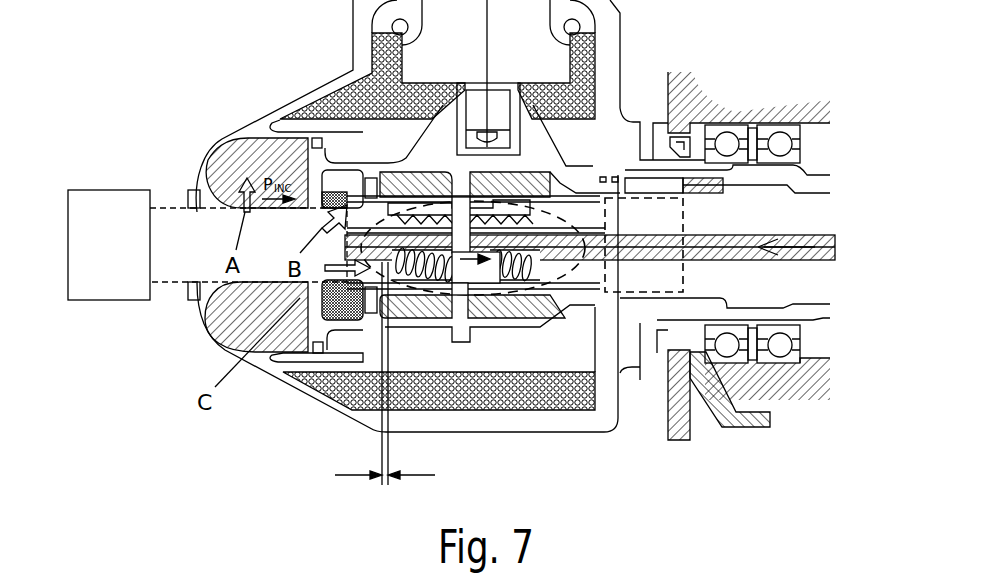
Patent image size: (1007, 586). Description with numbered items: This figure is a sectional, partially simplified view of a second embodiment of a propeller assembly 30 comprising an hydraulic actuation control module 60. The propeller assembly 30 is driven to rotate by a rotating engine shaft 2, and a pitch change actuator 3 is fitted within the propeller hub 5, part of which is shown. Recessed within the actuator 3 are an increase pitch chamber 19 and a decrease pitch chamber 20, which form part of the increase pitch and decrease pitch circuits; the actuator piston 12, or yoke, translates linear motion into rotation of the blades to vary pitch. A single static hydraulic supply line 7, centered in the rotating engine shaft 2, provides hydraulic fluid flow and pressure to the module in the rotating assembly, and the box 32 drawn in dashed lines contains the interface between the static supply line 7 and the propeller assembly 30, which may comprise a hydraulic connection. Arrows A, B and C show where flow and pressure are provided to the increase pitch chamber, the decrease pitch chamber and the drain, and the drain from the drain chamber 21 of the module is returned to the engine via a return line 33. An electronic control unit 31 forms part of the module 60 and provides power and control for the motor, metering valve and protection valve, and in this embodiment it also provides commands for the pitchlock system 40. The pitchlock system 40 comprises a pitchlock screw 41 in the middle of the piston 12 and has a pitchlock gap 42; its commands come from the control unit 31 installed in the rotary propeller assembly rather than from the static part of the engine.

The rotating engine shaft 2 is at (647, 355).
The pitch change actuator 3 is at (390, 148).
The propeller hub 5 is at (265, 110).
The static hydraulic supply line 7 is at (758, 228).
The actuator piston 12 is at (312, 332).
The increase pitch chamber 19 is at (218, 165).
The decrease pitch chamber 20 is at (337, 170).
The drain chamber 21 is at (413, 316).
The propeller assembly 30 is at (628, 115).
The electronic control unit 31 is at (103, 187).
The box 32 is at (660, 284).
The return line 33 is at (749, 428).
The pitchlock system 40 is at (332, 382).
The pitchlock screw 41 is at (526, 212).
The pitchlock gap 42 is at (398, 377).
The hydraulic actuation control module 60 is at (170, 287).